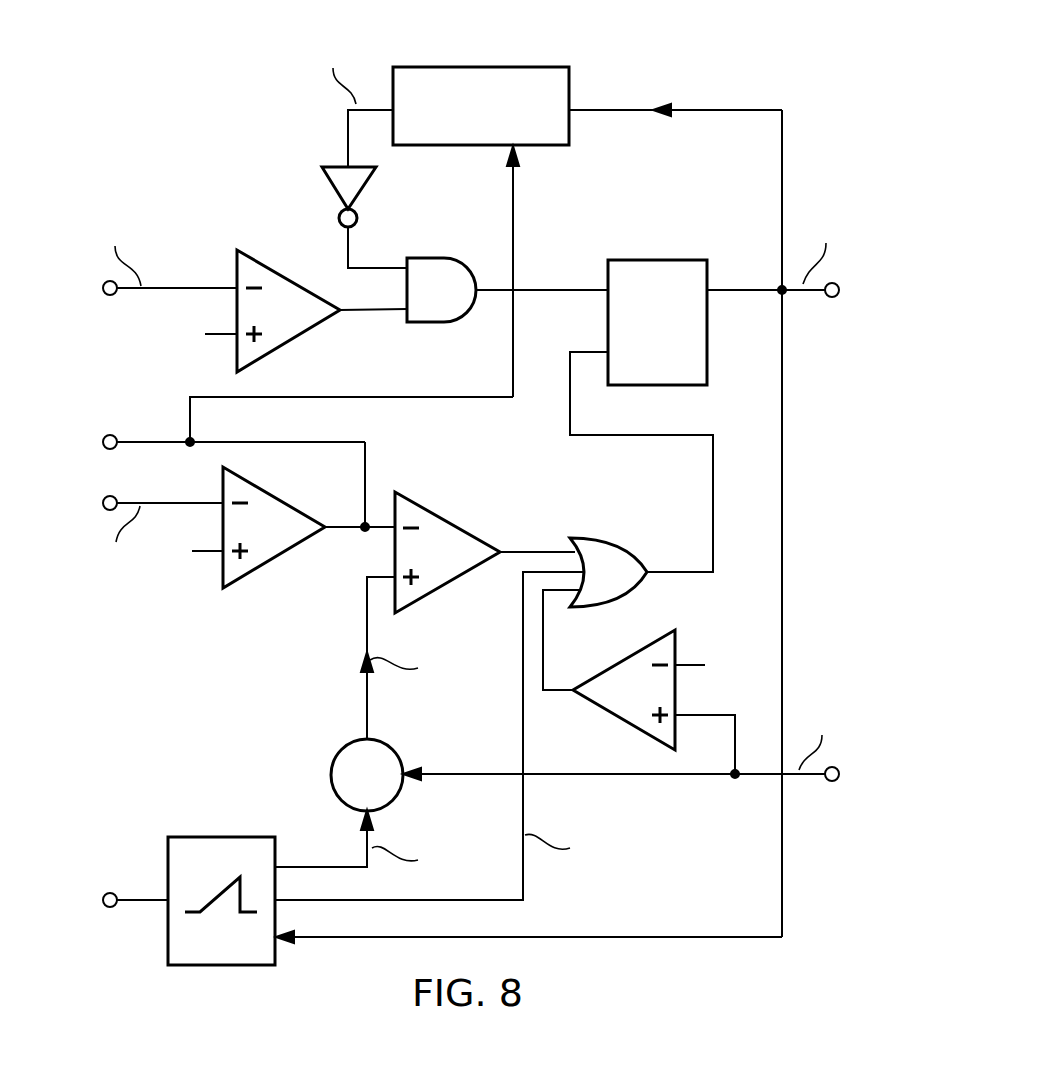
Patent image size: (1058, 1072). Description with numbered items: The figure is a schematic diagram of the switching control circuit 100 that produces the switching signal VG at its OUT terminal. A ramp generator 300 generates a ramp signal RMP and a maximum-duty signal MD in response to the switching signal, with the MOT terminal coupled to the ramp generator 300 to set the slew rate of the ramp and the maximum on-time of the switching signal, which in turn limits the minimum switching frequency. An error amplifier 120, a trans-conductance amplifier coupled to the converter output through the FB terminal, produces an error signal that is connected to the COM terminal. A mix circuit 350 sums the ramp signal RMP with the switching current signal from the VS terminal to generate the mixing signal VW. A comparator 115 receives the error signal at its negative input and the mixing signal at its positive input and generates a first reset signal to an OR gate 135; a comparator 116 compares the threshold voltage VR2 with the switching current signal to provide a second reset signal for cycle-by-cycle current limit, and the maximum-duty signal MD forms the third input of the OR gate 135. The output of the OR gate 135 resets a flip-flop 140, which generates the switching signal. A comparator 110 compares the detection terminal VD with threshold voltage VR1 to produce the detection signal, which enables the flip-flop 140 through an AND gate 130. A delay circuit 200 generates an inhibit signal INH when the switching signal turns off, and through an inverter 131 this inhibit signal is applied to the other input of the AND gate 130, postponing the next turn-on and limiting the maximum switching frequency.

The switching control circuit 100 is at (793, 26).
The comparator 110 is at (306, 338).
The comparator 115 is at (447, 516).
The comparator 116 is at (612, 718).
The error amplifier 120 is at (285, 556).
The AND gate 130 is at (444, 256).
The inverter 131 is at (325, 188).
The OR gate 135 is at (622, 538).
The flip-flop 140 is at (685, 256).
The delay circuit 200 is at (530, 63).
The ramp generator 300 is at (218, 836).
The mix circuit 350 is at (332, 752).